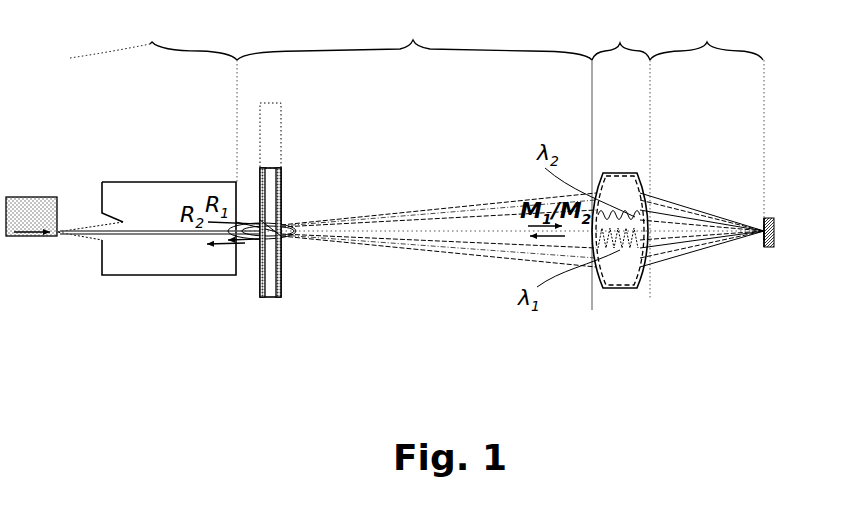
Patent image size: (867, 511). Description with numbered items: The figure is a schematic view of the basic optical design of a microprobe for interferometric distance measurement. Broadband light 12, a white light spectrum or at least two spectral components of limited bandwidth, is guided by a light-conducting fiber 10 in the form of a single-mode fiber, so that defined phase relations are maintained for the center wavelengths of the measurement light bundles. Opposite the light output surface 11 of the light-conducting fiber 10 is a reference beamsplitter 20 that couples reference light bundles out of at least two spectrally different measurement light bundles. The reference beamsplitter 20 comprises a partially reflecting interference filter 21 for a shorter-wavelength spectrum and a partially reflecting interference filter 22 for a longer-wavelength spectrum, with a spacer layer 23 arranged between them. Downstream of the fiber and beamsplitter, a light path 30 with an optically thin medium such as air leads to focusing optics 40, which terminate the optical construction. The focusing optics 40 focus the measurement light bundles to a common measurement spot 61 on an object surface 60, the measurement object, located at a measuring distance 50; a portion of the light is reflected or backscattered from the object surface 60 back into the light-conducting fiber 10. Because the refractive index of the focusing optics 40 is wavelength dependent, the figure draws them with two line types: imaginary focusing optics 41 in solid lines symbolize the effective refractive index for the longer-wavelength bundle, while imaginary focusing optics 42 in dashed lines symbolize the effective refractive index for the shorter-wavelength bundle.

The light-conducting fiber 10 is at (153, 96).
The light output surface 11 is at (262, 215).
The broadband light 12 is at (31, 216).
The reference beamsplitter 20 is at (262, 105).
The partially reflecting interference filter 21 is at (277, 297).
The partially reflecting interference filter 22 is at (263, 297).
The spacer layer 23 is at (270, 280).
The light path 30 is at (414, 160).
The focusing optics 40 is at (621, 156).
The imaginary focusing optics 41 is at (601, 290).
The imaginary focusing optics 42 is at (640, 290).
The measuring distance 50 is at (707, 115).
The object surface 60 is at (767, 247).
The measurement spot 61 is at (760, 240).